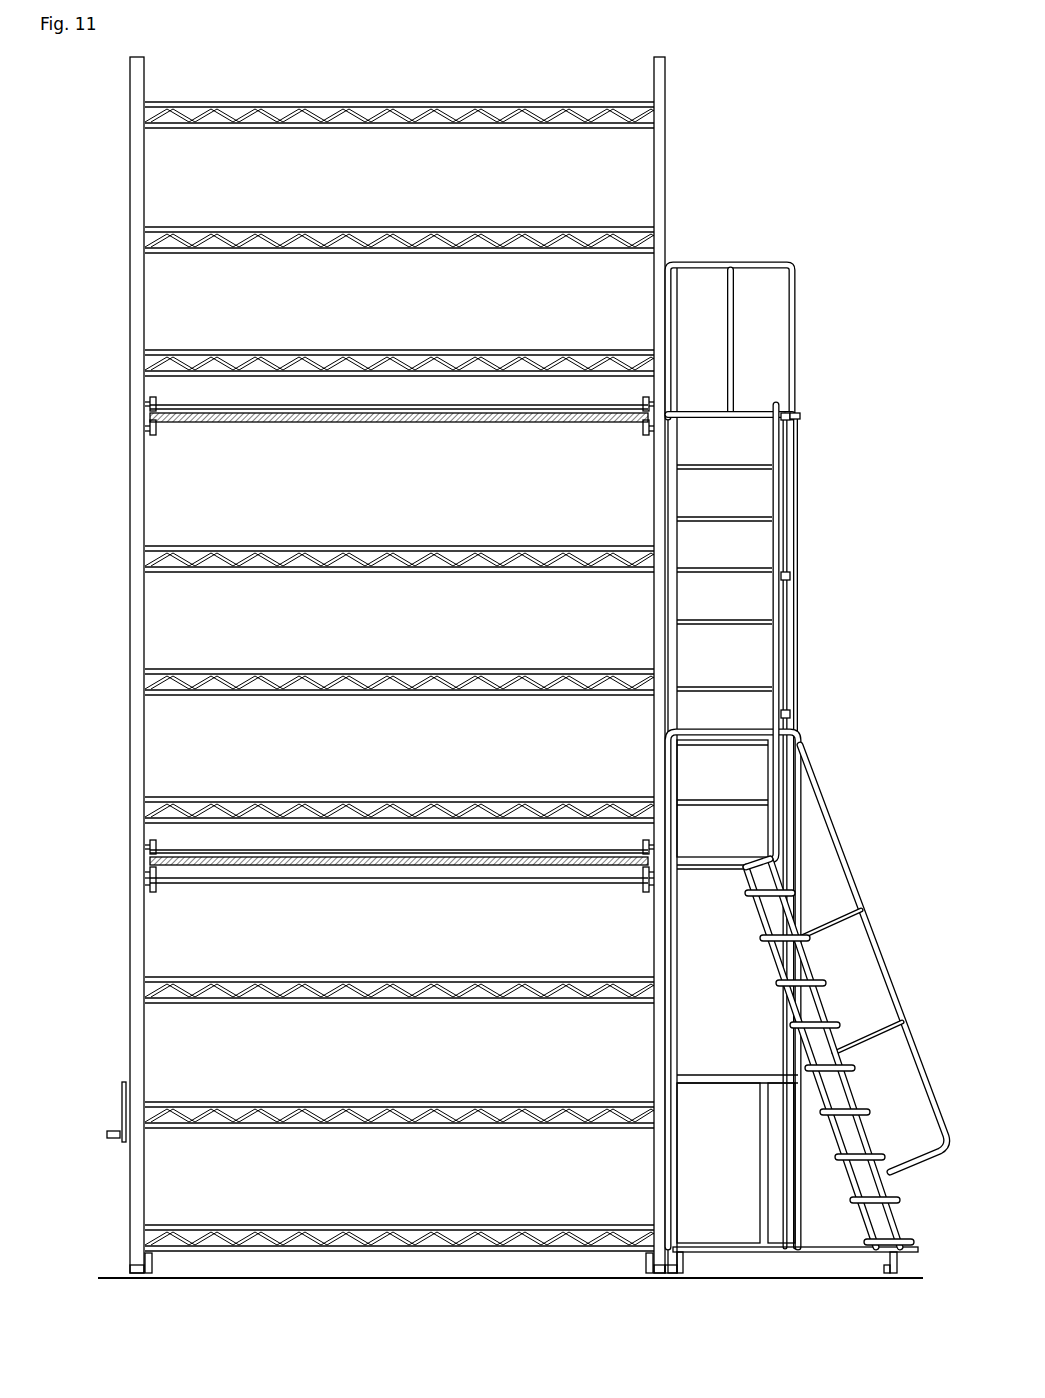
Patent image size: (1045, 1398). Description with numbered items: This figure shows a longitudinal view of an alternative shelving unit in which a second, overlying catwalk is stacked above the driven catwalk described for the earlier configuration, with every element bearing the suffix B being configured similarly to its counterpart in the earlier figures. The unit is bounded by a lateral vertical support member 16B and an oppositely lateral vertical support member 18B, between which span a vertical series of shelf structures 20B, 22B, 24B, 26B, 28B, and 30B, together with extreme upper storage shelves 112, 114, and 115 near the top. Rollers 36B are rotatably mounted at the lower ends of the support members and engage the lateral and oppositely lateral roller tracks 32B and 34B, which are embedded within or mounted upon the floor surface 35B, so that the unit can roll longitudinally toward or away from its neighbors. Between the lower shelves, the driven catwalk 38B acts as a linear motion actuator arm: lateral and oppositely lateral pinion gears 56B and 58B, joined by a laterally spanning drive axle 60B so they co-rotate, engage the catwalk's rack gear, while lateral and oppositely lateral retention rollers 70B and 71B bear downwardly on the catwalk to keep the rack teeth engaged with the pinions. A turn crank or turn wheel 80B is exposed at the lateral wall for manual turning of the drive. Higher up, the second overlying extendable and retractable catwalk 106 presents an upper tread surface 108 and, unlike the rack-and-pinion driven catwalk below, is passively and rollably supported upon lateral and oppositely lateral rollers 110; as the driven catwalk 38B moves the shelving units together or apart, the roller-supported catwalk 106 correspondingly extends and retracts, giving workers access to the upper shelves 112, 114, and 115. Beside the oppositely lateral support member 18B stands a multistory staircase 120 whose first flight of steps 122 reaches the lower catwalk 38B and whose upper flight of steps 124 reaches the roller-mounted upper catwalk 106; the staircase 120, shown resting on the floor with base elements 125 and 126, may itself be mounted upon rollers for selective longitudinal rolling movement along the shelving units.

The lateral vertical support member 16B is at (130, 176).
The oppositely lateral vertical support member 18B is at (664, 193).
The extreme upper storage shelf 115 is at (233, 106).
The extreme upper storage shelf 114 is at (205, 231).
The extreme upper storage shelf 112 is at (237, 354).
The upper tread surface 108 is at (277, 407).
The second overlying extendable and retractable catwalk 106 is at (338, 423).
The lateral and oppositely lateral rollers 110 is at (155, 433).
The shelf structure 30B is at (370, 546).
The shelf structure 28B is at (238, 669).
The shelf structure 26B is at (255, 797).
The lateral retention roller 70B is at (156, 848).
The oppositely lateral retention roller 71B is at (641, 847).
The catwalk 38B is at (291, 864).
The drive axle 60B is at (358, 881).
The lateral pinion gear 56B is at (154, 893).
The oppositely lateral pinion gear 58B is at (643, 895).
The shelf structure 24B is at (445, 977).
The shelf structure 22B is at (240, 1102).
The shelf structure 20B is at (255, 1232).
The turn crank or turn wheel 80B is at (107, 1134).
The lateral roller track 32B is at (148, 1280).
The roller 36B is at (155, 1262).
The oppositely lateral roller track 34B is at (660, 1270).
The floor surface 35B is at (357, 1306).
The multistory staircase 120 is at (806, 650).
The upper flight of steps 124 is at (735, 567).
The first flight of steps 122 is at (862, 1067).
The platform foot 125 is at (680, 1276).
The platform post base 126 is at (687, 1268).